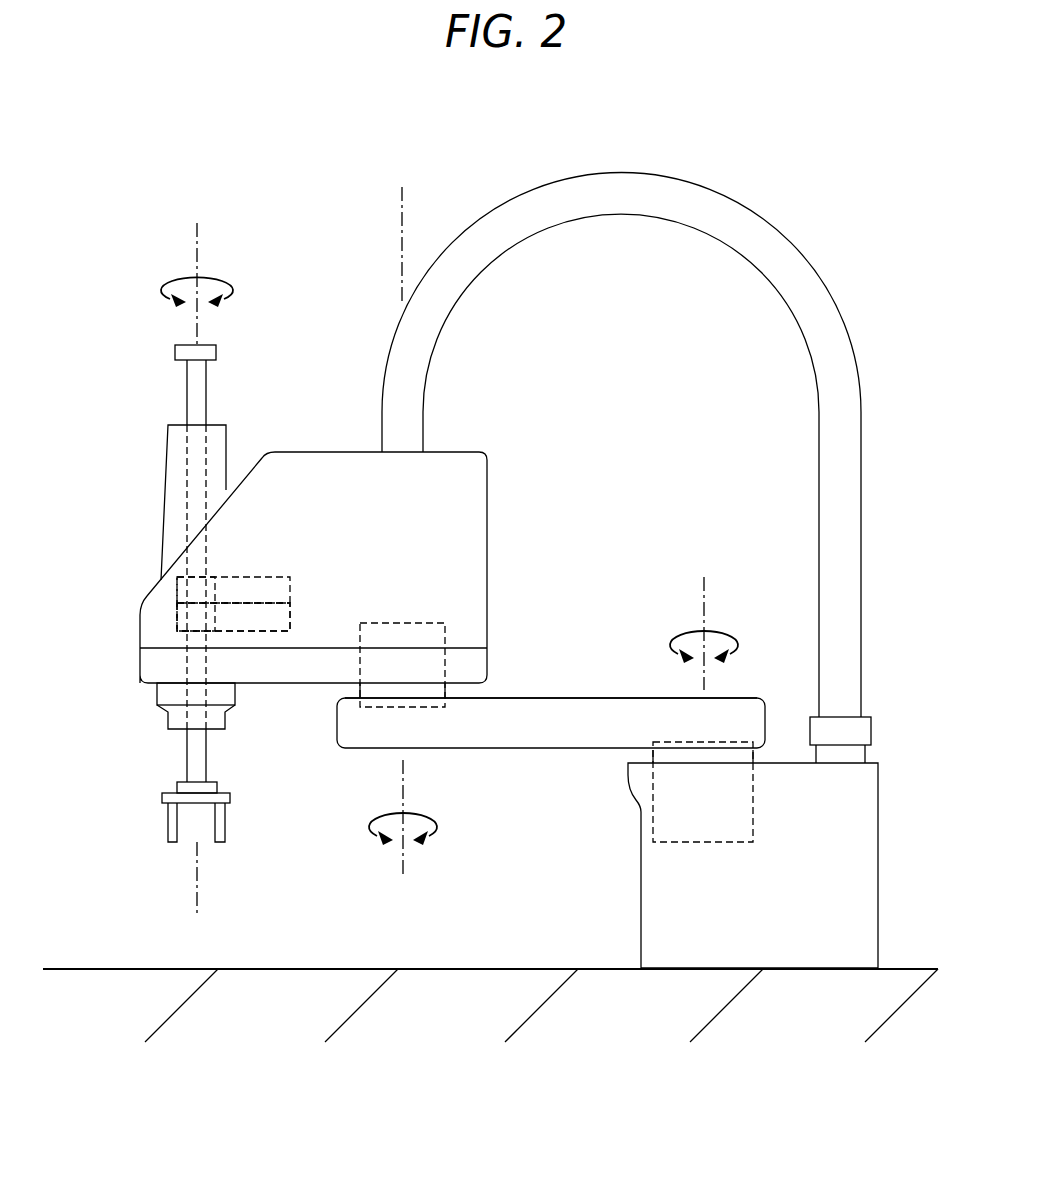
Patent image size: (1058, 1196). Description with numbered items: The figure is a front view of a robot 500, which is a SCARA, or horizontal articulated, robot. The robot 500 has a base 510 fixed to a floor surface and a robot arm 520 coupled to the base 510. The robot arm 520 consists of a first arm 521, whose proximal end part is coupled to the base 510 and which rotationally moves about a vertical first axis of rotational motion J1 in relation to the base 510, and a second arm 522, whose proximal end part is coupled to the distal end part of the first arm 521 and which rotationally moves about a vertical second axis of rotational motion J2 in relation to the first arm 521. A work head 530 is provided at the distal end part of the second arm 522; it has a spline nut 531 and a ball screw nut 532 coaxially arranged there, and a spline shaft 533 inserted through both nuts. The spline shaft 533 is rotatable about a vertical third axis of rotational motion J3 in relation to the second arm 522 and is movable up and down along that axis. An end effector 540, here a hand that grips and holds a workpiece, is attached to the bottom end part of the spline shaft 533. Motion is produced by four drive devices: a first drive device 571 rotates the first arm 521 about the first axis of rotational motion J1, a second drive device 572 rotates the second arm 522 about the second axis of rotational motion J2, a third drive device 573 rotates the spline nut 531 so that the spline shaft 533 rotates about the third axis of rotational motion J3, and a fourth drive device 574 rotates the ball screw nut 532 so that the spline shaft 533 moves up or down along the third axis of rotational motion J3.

The robot 500 is at (568, 172).
The base 510 is at (865, 862).
The robot arm 520 is at (523, 757).
The first arm 521 is at (570, 717).
The second arm 522 is at (310, 663).
The work head 530 is at (160, 485).
The spline nut 531 is at (190, 620).
The ball screw nut 532 is at (192, 592).
The spline shaft 533 is at (196, 392).
The end effector 540 is at (160, 818).
The first drive device 571 is at (670, 757).
The second drive device 572 is at (412, 693).
The third drive device 573 is at (280, 620).
The fourth drive device 574 is at (280, 590).
The first axis of rotational motion J1 is at (706, 592).
The second axis of rotational motion J2 is at (405, 863).
The third axis of rotational motion J3 is at (199, 235).